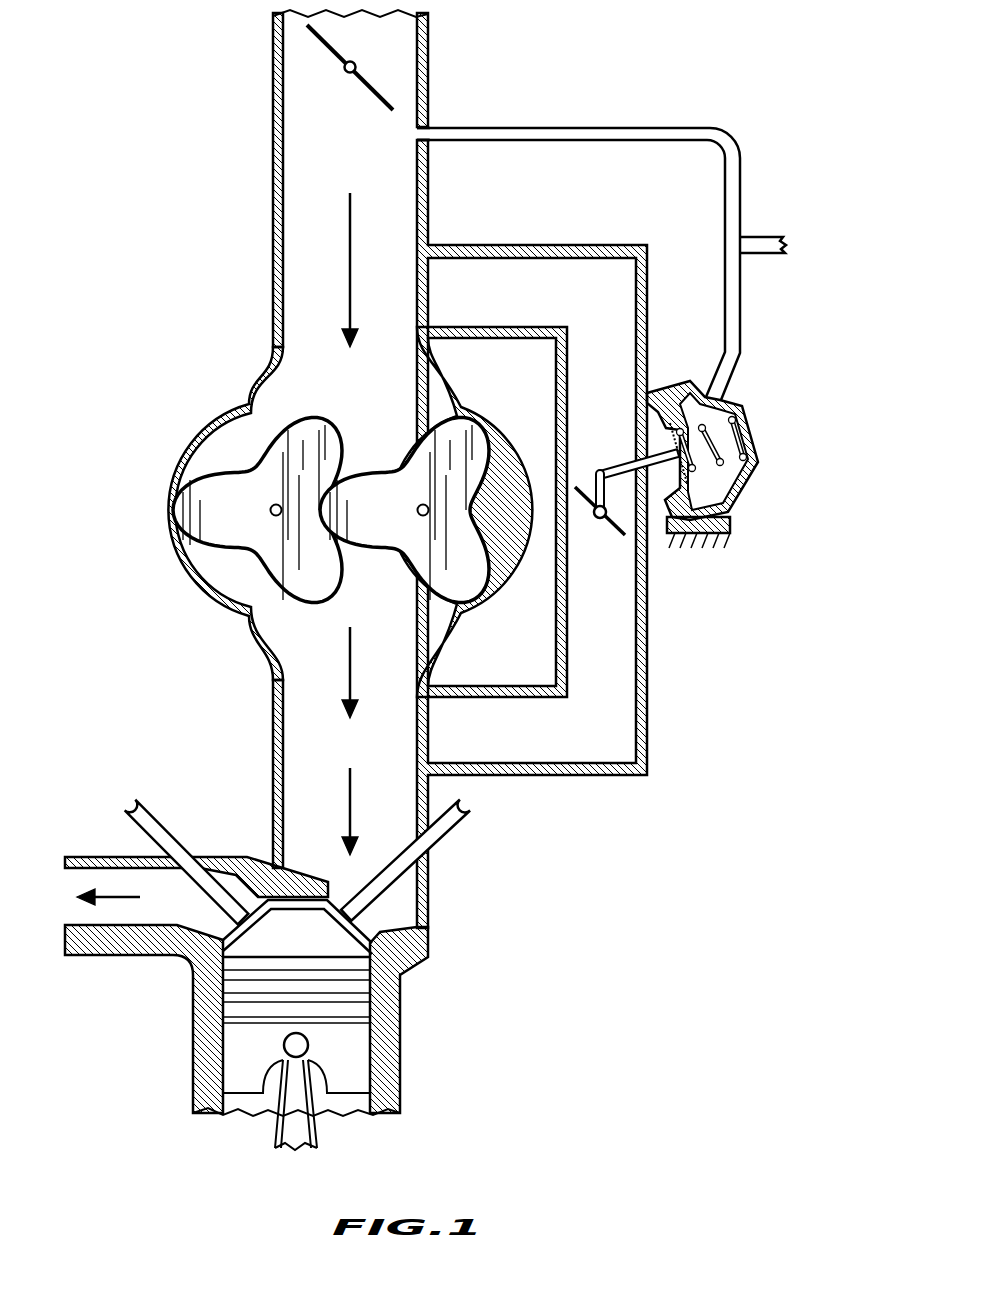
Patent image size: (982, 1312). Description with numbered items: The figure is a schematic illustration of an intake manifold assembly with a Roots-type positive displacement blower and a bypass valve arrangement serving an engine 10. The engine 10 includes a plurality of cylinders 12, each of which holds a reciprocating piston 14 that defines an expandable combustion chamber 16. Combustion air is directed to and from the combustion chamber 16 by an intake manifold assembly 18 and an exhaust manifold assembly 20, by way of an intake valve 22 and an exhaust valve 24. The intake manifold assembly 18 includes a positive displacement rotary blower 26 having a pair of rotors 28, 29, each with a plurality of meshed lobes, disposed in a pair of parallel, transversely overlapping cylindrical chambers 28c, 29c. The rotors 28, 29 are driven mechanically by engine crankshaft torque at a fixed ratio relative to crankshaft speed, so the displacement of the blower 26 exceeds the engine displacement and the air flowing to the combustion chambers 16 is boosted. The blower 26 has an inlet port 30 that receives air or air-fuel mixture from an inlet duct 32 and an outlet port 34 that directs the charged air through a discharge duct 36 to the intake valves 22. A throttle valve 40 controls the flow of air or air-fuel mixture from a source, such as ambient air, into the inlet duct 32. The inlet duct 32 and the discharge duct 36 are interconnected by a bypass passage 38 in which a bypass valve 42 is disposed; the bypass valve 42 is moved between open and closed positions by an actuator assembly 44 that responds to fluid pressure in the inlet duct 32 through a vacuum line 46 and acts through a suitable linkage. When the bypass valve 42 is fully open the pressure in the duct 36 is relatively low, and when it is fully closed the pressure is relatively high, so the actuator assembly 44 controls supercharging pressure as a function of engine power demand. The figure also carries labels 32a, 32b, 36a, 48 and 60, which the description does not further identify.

The engine 10 is at (283, 965).
The cylinder 12 is at (373, 1027).
The reciprocating piston 14 is at (350, 1070).
The combustion chamber 16 is at (306, 946).
The intake manifold assembly 18 is at (283, 517).
The exhaust manifold assembly 20 is at (96, 855).
The intake valve 22 is at (460, 823).
The exhaust valve 24 is at (160, 812).
The positive displacement rotary blower 26 is at (180, 513).
The rotor 28 is at (257, 550).
The cylindrical chamber 28c is at (200, 448).
The rotor 29 is at (400, 550).
The cylindrical chamber 29c is at (520, 512).
The inlet port 30 is at (330, 370).
The inlet duct 32 is at (337, 122).
The bypass passage wall 32a is at (470, 285).
The bypass passage inlet 32b is at (417, 132).
The outlet port 34 is at (320, 648).
The discharge duct 36 is at (320, 800).
The bypass chamber 36a is at (474, 722).
The bypass passage 38 is at (612, 647).
The throttle valve 40 is at (323, 47).
The bypass valve 42 is at (611, 525).
The actuator assembly 44 is at (762, 419).
The vacuum line 46 is at (638, 128).
The intake air flow 48 is at (207, 365).
The rotor shaft 60 is at (271, 511).